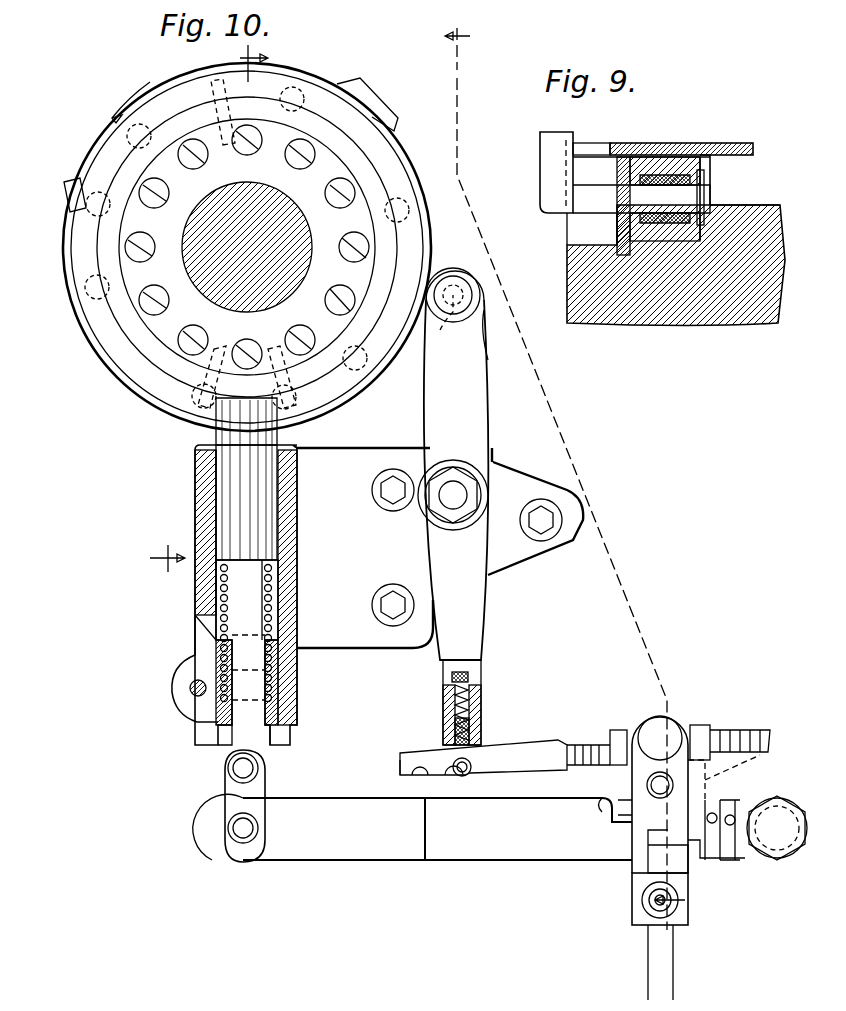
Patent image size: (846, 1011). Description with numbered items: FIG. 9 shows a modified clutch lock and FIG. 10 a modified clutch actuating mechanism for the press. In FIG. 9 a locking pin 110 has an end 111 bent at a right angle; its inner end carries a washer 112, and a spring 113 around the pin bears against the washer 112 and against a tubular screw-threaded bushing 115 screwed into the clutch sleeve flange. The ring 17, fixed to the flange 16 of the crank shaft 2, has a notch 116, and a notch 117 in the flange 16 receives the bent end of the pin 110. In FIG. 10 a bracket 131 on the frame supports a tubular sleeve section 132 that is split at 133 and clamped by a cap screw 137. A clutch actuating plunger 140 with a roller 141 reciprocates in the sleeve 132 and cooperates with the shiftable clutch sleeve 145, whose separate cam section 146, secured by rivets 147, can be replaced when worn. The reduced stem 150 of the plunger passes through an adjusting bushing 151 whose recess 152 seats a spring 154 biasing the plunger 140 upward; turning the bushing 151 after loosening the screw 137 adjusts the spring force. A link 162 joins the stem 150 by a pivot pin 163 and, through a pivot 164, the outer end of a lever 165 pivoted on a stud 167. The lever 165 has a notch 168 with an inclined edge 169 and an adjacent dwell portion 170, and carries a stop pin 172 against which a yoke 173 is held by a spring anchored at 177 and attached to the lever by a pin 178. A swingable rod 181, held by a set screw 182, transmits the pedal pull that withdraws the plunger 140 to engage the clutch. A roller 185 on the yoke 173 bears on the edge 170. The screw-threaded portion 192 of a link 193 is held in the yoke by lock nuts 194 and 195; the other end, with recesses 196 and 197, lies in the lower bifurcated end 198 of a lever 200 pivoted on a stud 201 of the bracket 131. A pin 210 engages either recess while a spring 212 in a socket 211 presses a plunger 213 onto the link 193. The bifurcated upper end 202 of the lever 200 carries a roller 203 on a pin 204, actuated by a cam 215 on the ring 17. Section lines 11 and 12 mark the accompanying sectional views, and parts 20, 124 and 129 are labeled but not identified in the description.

In FIG. 9, the crank shaft 2 is at (660, 325).
In FIG. 10, the section line 11- 11 is at (580, 473).
In FIG. 10, the section line 12-12 / pin 12 is at (190, 310).
In FIG. 9, the section line 12-12 / pin 12 is at (650, 160).
In FIG. 9, the flange 16 is at (560, 205).
In FIG. 10, the ring 17 is at (82, 328).
In FIG. 10, the wheel disc 20 is at (345, 193).
In FIG. 9, the locking pin 110 is at (605, 195).
In FIG. 10, the end 111 is at (68, 185).
In FIG. 9, the end 111 is at (552, 168).
In FIG. 9, the washer 112 is at (702, 183).
In FIG. 9, the spring 113 is at (690, 150).
In FIG. 9, the tubular screw-threaded bushing 115 is at (645, 170).
In FIG. 9, the notch 116 is at (585, 148).
In FIG. 9, the notch 117 is at (575, 232).
In FIG. 10, the pin 124 is at (722, 820).
In FIG. 10, the rod 129 is at (660, 905).
In FIG. 10, the bracket 131 is at (365, 645).
In FIG. 10, the tubular sleeve section 132 is at (203, 525).
In FIG. 10, the split 133 is at (200, 653).
In FIG. 10, the cap screw 137 is at (190, 692).
In FIG. 10, the clutch actuating plunger 140 is at (205, 496).
In FIG. 9, the clutch actuating plunger 140 is at (705, 170).
In FIG. 10, the roller 141 is at (232, 432).
In FIG. 9, the roller 141 is at (760, 207).
In FIG. 10, the clutch sleeve 145 is at (128, 352).
In FIG. 10, the cam section 146 is at (268, 372).
In FIG. 10, the rivets 147 is at (190, 400).
In FIG. 10, the reduced stem 150 is at (240, 595).
In FIG. 10, the adjusting bushing 151 is at (212, 740).
In FIG. 10, the recess 152 is at (272, 733).
In FIG. 10, the spring 154 is at (272, 620).
In FIG. 10, the link 162 is at (232, 792).
In FIG. 10, the pivot pin 163 is at (228, 777).
In FIG. 10, the pivot 164 is at (232, 835).
In FIG. 10, the lever 165 is at (382, 870).
In FIG. 10, the stud 167 is at (777, 840).
In FIG. 10, the notch 168 is at (605, 815).
In FIG. 10, the inclined edge 169 is at (632, 835).
In FIG. 10, the dwell portion 170 is at (724, 777).
In FIG. 10, the stop pin 172 is at (705, 855).
In FIG. 10, the yoke 173 is at (640, 880).
In FIG. 10, the anchor point 177 is at (690, 822).
In FIG. 10, the pin 178 is at (742, 822).
In FIG. 10, the swingable rod 181 is at (673, 950).
In FIG. 10, the set screw 182 is at (650, 920).
In FIG. 10, the roller 185 is at (650, 783).
In FIG. 10, the screw-threaded portion 192 is at (592, 745).
In FIG. 10, the link 193 is at (520, 745).
In FIG. 10, the lock nut 194 is at (618, 730).
In FIG. 10, the lock nut 195 is at (698, 725).
In FIG. 10, the recess 196 is at (405, 778).
In FIG. 10, the recess 197 is at (470, 775).
In FIG. 10, the lower bifurcated end 198 is at (445, 712).
In FIG. 10, the lever 200 is at (492, 592).
In FIG. 10, the stud 201 is at (470, 490).
In FIG. 10, the bifurcated upper end 202 is at (472, 358).
In FIG. 10, the roller 203 is at (468, 280).
In FIG. 10, the pin 204 is at (456, 328).
In FIG. 10, the pin 210 is at (462, 775).
In FIG. 10, the socket 211 is at (462, 672).
In FIG. 10, the spring 212 is at (470, 692).
In FIG. 10, the plunger 213 is at (472, 722).
In FIG. 10, the cam 215 is at (365, 86).